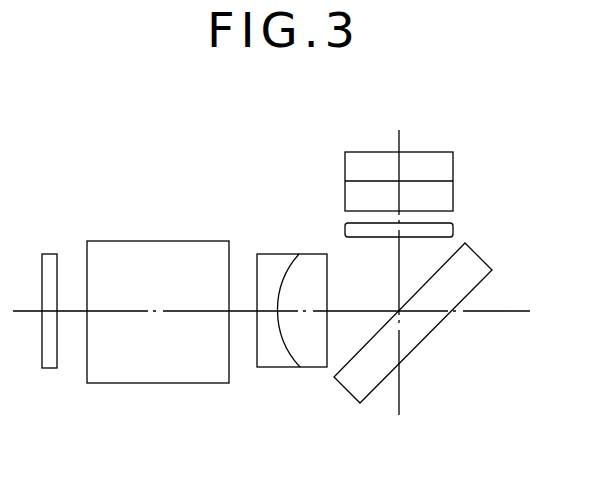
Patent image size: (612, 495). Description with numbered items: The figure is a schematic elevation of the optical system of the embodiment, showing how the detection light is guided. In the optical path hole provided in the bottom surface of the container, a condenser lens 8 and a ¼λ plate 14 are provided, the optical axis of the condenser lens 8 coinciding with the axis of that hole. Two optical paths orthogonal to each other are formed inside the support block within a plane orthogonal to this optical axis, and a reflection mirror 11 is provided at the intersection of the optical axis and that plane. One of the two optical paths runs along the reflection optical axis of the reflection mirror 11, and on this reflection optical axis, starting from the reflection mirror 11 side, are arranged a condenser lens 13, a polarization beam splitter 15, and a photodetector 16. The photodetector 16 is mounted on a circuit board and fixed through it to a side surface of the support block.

The condenser lens 8 is at (453, 167).
The reflection mirror 11 is at (485, 278).
The condenser lens 13 is at (275, 254).
The ¼λ plate 14 is at (453, 228).
The polarization beam splitter 15 is at (155, 383).
The photodetector 16 is at (52, 368).